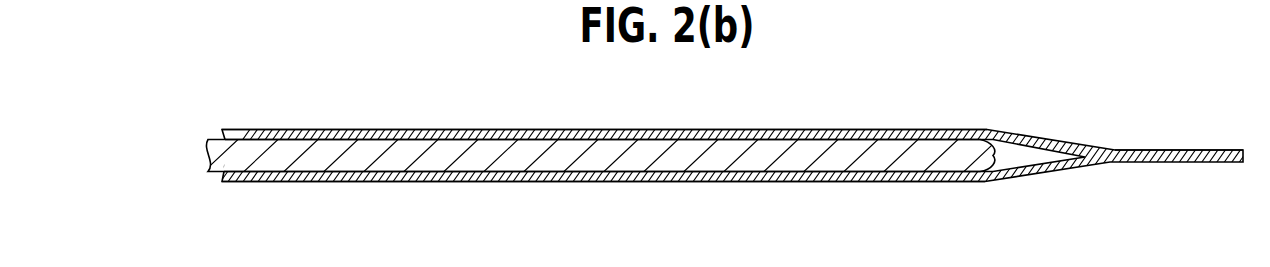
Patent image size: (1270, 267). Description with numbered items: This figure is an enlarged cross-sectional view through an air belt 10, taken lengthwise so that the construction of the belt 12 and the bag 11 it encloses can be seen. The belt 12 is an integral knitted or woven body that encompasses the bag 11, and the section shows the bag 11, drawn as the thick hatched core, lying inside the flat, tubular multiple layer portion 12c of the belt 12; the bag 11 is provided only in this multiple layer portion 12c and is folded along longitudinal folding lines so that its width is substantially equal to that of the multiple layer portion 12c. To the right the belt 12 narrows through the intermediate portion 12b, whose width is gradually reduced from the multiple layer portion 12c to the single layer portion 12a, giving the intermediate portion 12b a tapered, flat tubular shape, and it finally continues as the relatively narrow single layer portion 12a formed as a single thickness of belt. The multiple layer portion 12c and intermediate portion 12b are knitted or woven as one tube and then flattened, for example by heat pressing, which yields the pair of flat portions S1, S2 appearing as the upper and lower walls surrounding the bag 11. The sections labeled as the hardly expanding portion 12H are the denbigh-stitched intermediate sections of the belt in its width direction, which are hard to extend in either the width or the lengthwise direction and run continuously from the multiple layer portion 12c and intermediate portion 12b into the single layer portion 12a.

The air belt 10 is at (813, 114).
The bag 11 is at (637, 155).
The belt 12 is at (558, 128).
The single layer portion 12a is at (1164, 147).
The intermediate portion 12b is at (1029, 180).
The multiple layer portion 12c is at (333, 127).
The hardly expanding portion 12H is at (913, 129).
The flat portion S1 is at (760, 129).
The flat portion S2 is at (775, 183).